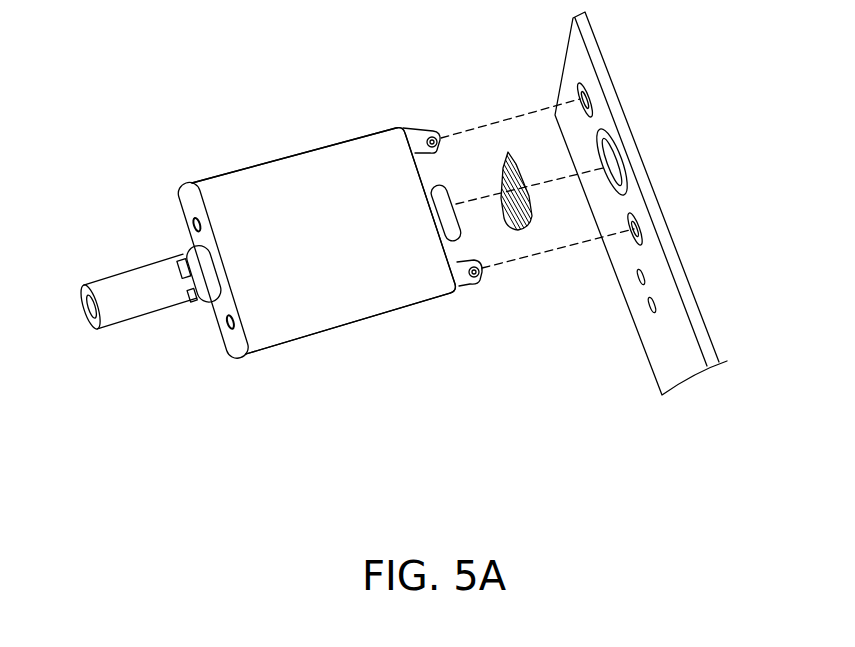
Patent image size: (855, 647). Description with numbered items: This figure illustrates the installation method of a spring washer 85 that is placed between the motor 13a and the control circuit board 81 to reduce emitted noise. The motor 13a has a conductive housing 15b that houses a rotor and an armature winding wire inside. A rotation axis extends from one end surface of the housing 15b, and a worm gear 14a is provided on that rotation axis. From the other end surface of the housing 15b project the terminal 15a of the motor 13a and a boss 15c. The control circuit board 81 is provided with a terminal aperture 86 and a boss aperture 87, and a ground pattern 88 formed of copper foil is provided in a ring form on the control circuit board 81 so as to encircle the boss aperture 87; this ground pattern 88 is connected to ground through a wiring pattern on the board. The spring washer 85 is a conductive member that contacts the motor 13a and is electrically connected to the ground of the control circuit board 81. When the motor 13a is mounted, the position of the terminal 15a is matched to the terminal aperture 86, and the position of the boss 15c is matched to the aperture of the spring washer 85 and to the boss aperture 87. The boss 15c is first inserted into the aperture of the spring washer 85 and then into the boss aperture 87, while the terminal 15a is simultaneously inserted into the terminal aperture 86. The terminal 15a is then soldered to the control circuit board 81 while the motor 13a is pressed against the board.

The motor 13a is at (269, 360).
The worm gear 14a is at (132, 312).
The terminal 15a is at (418, 138).
The housing 15b is at (352, 312).
The boss 15c is at (443, 191).
The control circuit board 81 is at (692, 296).
The spring washer 85 is at (513, 168).
The terminal aperture 86 is at (590, 99).
The boss aperture 87 is at (611, 167).
The ground pattern 88 is at (616, 133).